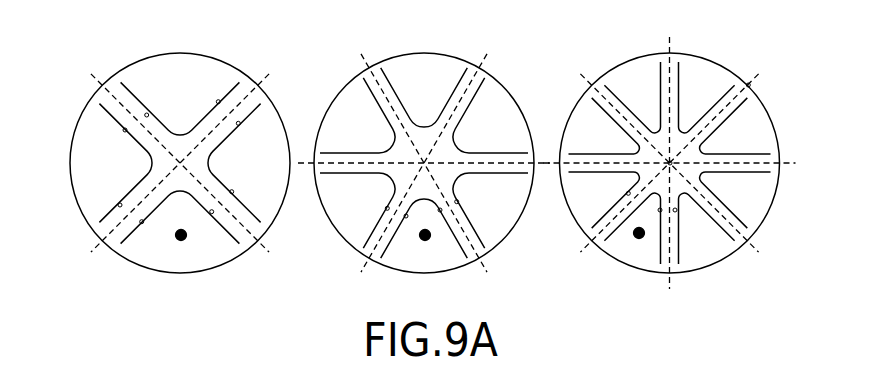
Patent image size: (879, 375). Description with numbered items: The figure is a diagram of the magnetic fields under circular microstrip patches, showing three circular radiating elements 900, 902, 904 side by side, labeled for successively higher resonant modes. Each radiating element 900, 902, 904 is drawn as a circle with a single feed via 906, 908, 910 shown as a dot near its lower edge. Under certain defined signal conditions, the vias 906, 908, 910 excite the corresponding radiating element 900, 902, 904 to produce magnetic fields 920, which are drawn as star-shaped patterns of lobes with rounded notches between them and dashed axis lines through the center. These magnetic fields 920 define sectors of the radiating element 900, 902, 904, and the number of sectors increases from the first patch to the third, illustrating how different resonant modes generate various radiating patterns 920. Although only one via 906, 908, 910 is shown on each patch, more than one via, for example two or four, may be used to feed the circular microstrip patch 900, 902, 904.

The radiating element 900 is at (86, 138).
The radiating element 902 is at (497, 99).
The radiating element 904 is at (762, 125).
The via 906 is at (179, 241).
The via 908 is at (425, 242).
The via 910 is at (638, 240).
The magnetic fields 920 is at (133, 95).